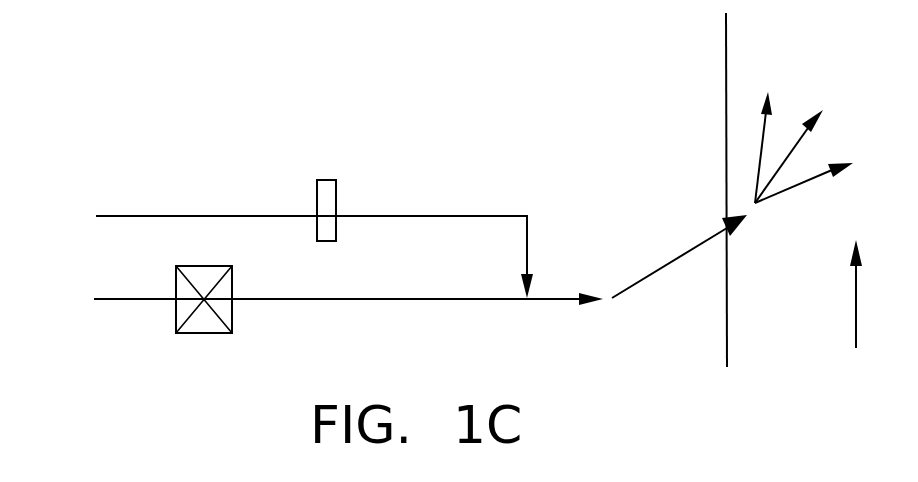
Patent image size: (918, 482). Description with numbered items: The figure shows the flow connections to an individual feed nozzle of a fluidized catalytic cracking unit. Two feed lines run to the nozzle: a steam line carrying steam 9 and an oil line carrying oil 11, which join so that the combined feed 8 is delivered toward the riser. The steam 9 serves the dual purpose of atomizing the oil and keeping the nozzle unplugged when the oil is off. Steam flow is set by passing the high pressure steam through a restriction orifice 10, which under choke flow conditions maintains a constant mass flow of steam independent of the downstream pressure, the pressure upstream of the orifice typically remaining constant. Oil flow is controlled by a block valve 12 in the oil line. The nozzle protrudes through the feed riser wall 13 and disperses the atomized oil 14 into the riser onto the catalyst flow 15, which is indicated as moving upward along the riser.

The combined light beam 8 is at (590, 300).
The steam 9 is at (124, 217).
The restriction orifice 10 is at (336, 180).
The oil 11 is at (117, 300).
The block valve 12 is at (185, 333).
The feed riser wall 13 is at (732, 210).
The atomized oil 14 is at (769, 100).
The catalyst flow 15 is at (862, 311).